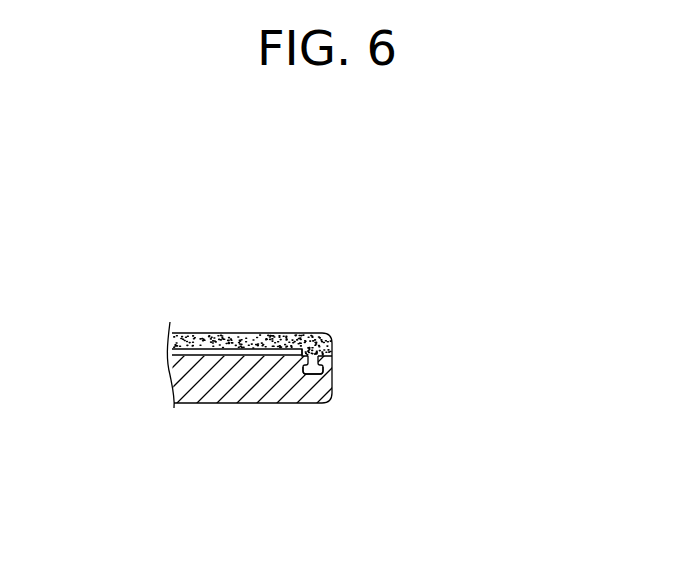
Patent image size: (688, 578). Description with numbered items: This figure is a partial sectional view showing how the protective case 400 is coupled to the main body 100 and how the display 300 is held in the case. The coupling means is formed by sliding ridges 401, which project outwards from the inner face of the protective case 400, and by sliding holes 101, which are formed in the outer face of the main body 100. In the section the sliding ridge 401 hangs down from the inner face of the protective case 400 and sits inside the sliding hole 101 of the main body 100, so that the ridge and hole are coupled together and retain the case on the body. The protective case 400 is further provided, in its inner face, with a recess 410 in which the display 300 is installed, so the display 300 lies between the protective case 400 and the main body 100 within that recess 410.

The main body 100 is at (257, 387).
The sliding holes 101 is at (306, 375).
The display 300 is at (296, 333).
The protective case 400 is at (224, 333).
The sliding ridges 401 is at (322, 365).
The recess 410 is at (235, 349).